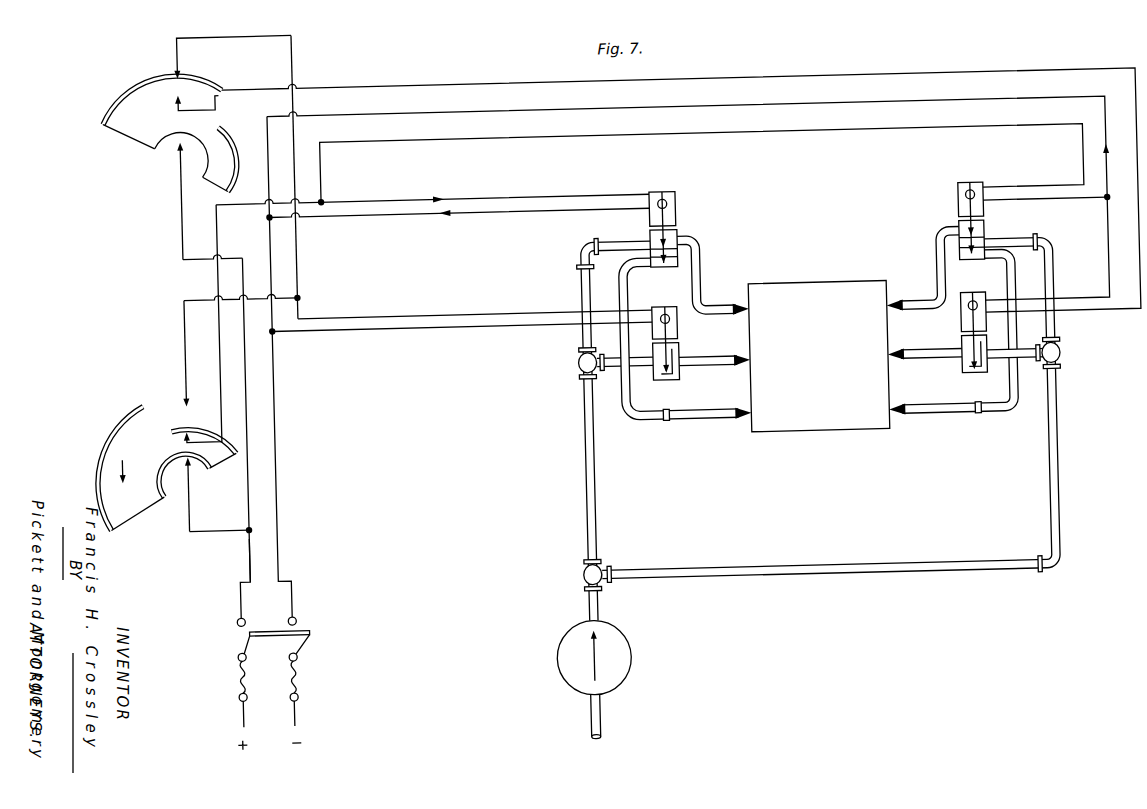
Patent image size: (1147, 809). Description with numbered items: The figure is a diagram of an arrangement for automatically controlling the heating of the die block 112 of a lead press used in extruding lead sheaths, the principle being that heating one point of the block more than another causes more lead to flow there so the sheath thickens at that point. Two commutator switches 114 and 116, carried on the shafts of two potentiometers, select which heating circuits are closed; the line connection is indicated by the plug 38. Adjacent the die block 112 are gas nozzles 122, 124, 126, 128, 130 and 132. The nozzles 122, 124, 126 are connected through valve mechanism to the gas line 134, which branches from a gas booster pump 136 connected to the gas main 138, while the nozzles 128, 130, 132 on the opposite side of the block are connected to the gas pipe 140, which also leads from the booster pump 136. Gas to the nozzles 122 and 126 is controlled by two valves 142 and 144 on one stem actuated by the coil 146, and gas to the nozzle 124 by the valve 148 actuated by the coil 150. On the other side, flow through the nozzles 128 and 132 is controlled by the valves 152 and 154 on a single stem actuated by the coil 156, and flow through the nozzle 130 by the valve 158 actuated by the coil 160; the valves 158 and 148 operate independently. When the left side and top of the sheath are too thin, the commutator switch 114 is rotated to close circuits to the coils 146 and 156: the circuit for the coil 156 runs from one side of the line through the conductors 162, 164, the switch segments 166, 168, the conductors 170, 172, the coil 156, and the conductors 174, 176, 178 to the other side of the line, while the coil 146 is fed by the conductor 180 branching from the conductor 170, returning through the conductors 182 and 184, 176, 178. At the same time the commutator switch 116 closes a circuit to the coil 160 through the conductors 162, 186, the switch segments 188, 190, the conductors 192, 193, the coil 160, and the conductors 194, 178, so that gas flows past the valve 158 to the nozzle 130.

The plug connector 38 is at (288, 677).
The die block 112 is at (813, 295).
The commutator switch 114 is at (206, 466).
The commutator switch 116 is at (170, 128).
The gas nozzle 122 is at (922, 313).
The gas nozzle 124 is at (922, 362).
The gas nozzle 126 is at (922, 417).
The gas nozzle 128 is at (726, 306).
The gas nozzle 130 is at (719, 360).
The gas nozzle 132 is at (730, 414).
The gas line 134 is at (1052, 421).
The gas booster pump 136 is at (614, 640).
The gas main 138 is at (593, 710).
The gas pipe 140 is at (584, 436).
The valve 142 is at (990, 244).
The valve 144 is at (966, 267).
The coil 146 is at (990, 199).
The valve 148 is at (984, 374).
The coil 150 is at (974, 307).
The valve 152 is at (689, 242).
The valve 154 is at (645, 268).
The coil 156 is at (681, 202).
The valve 158 is at (656, 372).
The coil 160 is at (675, 314).
The conductor 162 is at (247, 558).
The conductor 164 is at (188, 504).
The switch segment 166 is at (165, 457).
The switch segment 168 is at (229, 437).
The conductor 170 is at (223, 332).
The conductor 172 is at (488, 197).
The conductor 174 is at (418, 210).
The conductor 176 is at (275, 270).
The conductor 178 is at (276, 475).
The conductor 180 is at (491, 135).
The conductor 182 is at (1088, 210).
The conductor 184 is at (1079, 108).
The conductor 186 is at (247, 374).
The switch segment 188 is at (200, 128).
The switch segment 190 is at (149, 77).
The conductor 192 is at (269, 27).
The conductor 193 is at (474, 304).
The conductor 194 is at (466, 325).